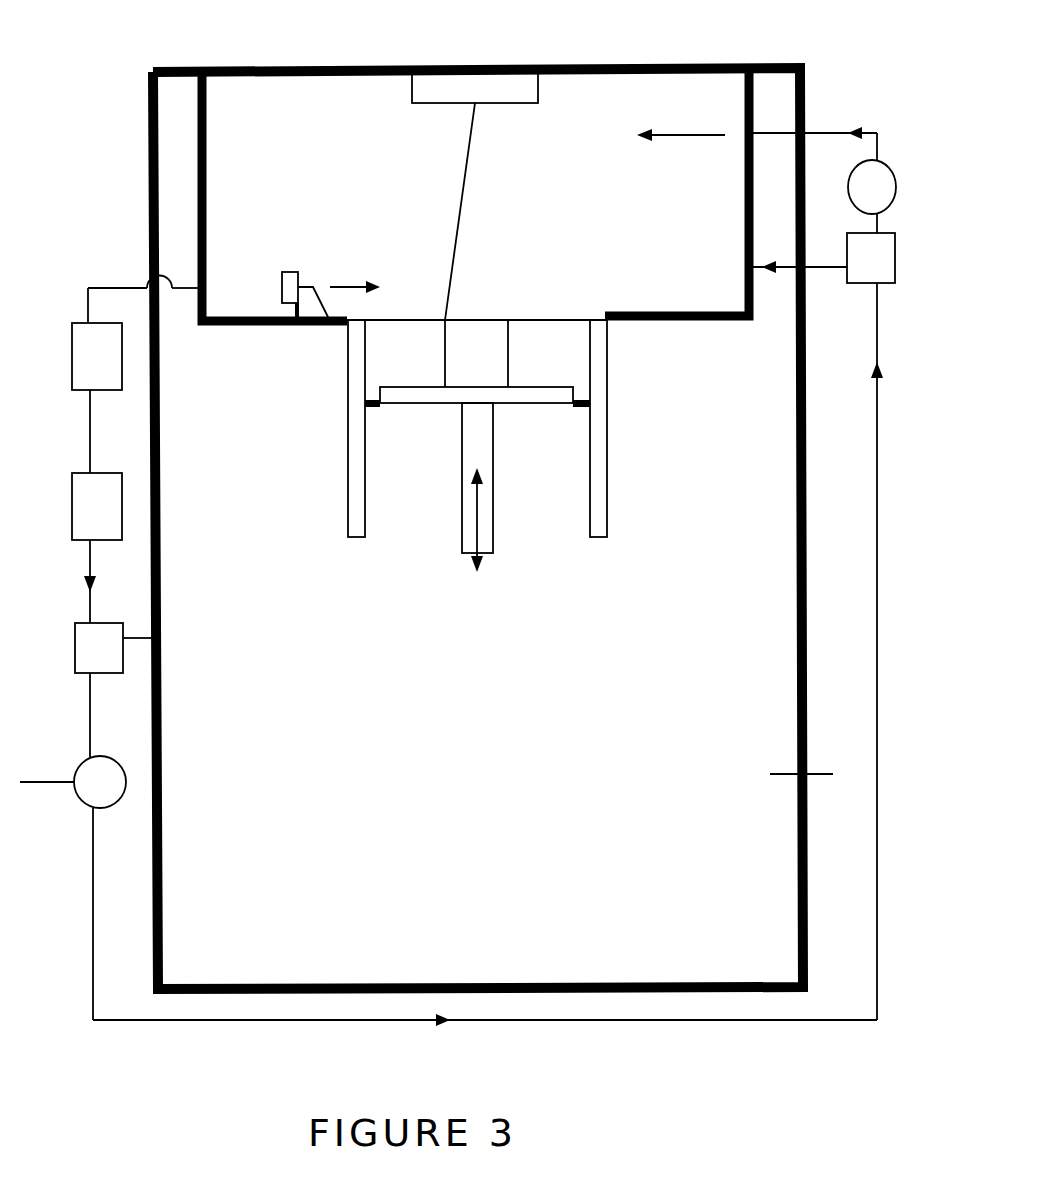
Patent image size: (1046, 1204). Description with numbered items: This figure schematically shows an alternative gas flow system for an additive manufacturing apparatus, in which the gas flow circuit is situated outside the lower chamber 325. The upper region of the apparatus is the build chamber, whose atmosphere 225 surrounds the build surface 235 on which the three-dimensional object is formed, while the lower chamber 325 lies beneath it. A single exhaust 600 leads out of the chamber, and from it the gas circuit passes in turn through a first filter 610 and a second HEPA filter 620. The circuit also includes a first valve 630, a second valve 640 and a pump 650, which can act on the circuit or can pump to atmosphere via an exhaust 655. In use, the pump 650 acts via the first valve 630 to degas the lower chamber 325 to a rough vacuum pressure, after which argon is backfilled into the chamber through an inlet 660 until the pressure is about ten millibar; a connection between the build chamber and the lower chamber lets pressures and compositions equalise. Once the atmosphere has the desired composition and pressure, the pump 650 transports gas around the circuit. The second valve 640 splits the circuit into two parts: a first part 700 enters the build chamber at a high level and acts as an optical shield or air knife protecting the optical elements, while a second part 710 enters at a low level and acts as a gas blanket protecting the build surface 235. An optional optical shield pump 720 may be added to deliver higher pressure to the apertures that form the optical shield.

The atmosphere of the build chamber 225 is at (475, 195).
The build surface 235 is at (543, 319).
The lower chamber 325 is at (478, 528).
The exhaust 600 is at (143, 266).
The first filter 610 is at (97, 356).
The second HEPA filter 620 is at (97, 506).
The first valve 630 is at (113, 648).
The second valve 640 is at (871, 258).
The pump 650 is at (100, 782).
The exhaust 655 is at (25, 778).
The inlet 660 is at (820, 770).
The first part 700 is at (830, 131).
The second part 710 is at (771, 265).
The optical shield pump 720 is at (872, 196).